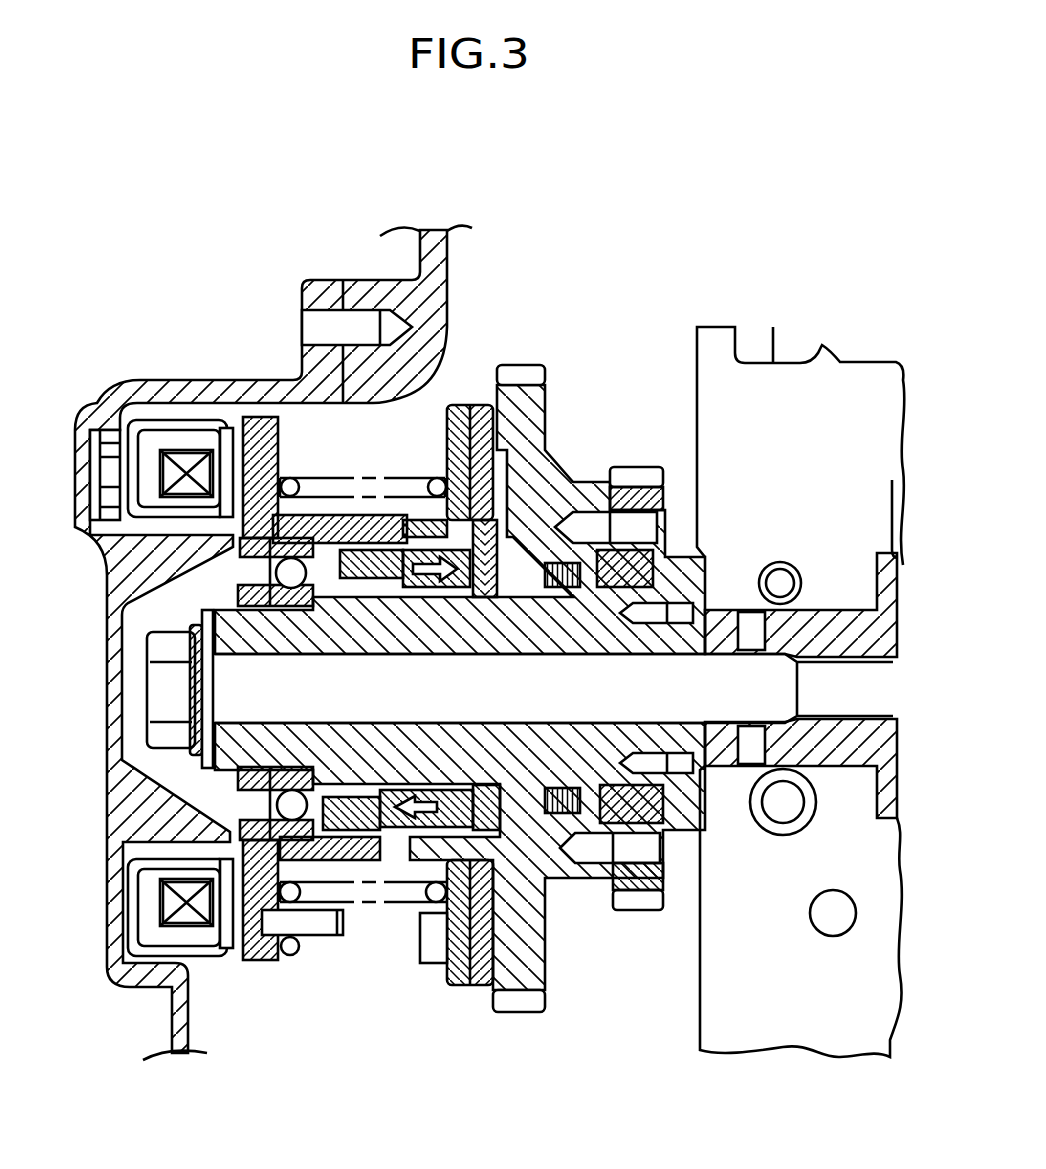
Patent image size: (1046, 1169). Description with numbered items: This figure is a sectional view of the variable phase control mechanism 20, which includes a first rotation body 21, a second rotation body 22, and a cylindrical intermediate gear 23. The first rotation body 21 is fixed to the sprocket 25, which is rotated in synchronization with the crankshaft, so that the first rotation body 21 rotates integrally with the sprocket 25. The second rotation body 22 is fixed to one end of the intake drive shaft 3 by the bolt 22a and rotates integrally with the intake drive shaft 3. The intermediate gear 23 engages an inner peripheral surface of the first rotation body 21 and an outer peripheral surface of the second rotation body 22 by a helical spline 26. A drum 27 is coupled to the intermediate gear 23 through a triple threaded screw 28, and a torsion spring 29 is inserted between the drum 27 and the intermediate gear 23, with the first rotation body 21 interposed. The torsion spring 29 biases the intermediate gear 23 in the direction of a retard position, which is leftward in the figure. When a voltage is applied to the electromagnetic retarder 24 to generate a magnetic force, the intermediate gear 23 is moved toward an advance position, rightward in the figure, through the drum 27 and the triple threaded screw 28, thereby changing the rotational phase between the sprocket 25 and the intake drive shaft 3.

The intake drive shaft 3 is at (712, 640).
The variable phase control mechanism 20 is at (373, 967).
The first rotation body 21 is at (460, 403).
The second rotation body 22 is at (635, 555).
The bolt 22a is at (170, 733).
The cylindrical intermediate gear 23 is at (390, 515).
The electromagnetic retarder 24 is at (177, 453).
The sprocket 25 is at (633, 465).
The helical spline 26 is at (445, 557).
The drum 27 is at (190, 463).
The triple threaded screw 28 is at (337, 477).
The torsion spring 29 is at (262, 433).